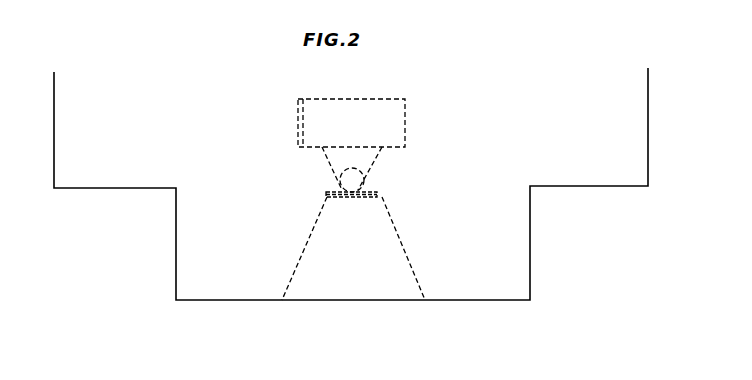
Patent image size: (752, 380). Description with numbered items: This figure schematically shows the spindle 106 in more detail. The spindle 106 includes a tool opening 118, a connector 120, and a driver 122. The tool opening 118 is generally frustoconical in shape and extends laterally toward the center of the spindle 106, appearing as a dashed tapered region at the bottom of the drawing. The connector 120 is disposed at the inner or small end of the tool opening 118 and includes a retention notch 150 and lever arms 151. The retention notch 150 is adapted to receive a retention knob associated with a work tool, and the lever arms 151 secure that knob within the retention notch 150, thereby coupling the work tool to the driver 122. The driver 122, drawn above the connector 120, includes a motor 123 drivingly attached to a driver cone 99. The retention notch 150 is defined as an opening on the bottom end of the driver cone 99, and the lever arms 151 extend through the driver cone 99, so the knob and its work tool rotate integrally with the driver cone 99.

The spindle 106 is at (90, 131).
The tool opening 118 is at (350, 269).
The connector 120 is at (295, 191).
The driver 122 is at (435, 133).
The motor 123 is at (313, 120).
The driver cone 99 is at (318, 160).
The retention notch 150 is at (360, 168).
The lever arms 151 is at (380, 190).